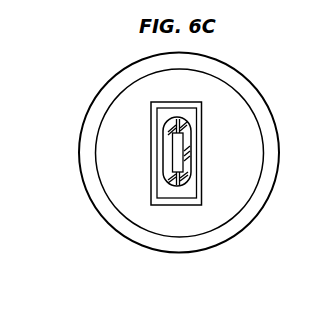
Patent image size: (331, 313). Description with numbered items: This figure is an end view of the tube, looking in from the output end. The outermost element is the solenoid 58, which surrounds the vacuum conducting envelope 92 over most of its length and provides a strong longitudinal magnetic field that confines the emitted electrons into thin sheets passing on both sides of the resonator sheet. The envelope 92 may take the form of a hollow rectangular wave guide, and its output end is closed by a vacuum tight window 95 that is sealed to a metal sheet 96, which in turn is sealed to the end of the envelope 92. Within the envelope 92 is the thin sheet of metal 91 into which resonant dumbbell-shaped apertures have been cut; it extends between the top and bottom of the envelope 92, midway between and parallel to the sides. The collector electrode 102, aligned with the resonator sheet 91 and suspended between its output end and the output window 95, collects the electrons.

The solenoid 58 is at (88, 107).
The vacuum conducting envelope 92 is at (152, 148).
The metal sheet 96 is at (163, 113).
The window 95 is at (186, 132).
The collector electrode 102 is at (187, 156).
The thin sheet of metal 91 is at (180, 180).